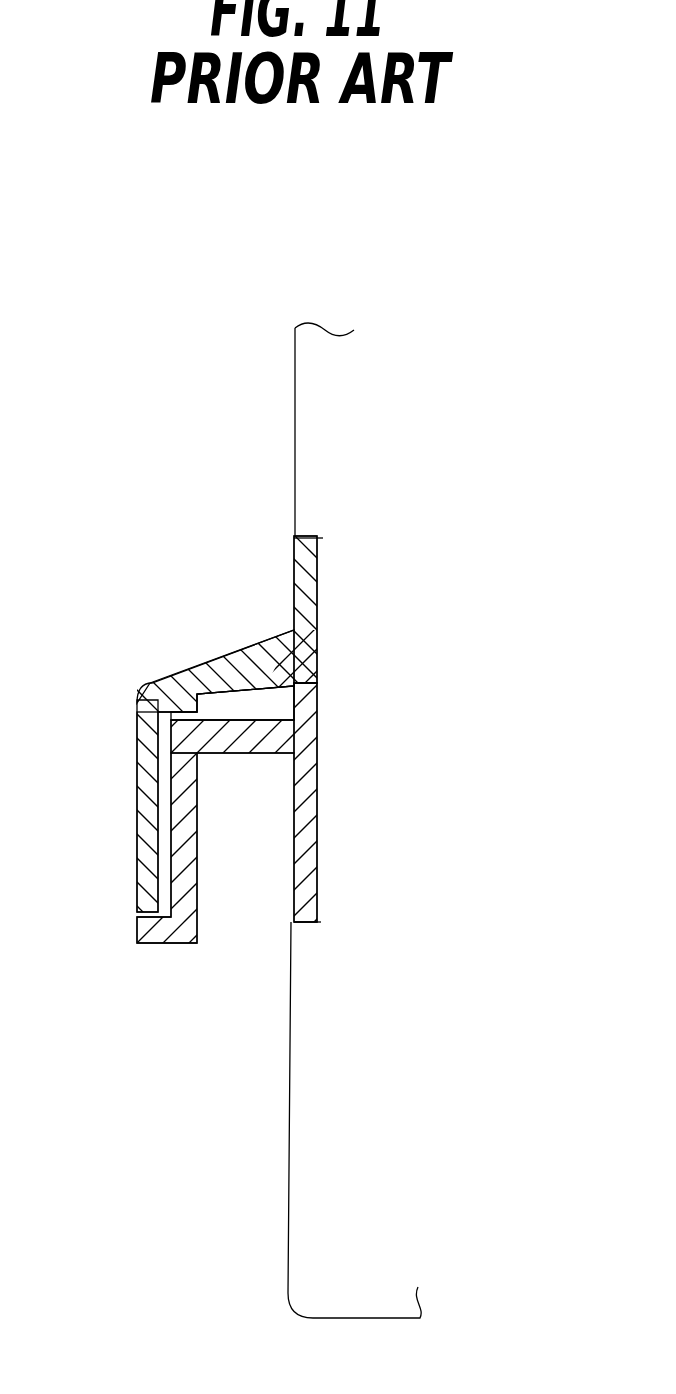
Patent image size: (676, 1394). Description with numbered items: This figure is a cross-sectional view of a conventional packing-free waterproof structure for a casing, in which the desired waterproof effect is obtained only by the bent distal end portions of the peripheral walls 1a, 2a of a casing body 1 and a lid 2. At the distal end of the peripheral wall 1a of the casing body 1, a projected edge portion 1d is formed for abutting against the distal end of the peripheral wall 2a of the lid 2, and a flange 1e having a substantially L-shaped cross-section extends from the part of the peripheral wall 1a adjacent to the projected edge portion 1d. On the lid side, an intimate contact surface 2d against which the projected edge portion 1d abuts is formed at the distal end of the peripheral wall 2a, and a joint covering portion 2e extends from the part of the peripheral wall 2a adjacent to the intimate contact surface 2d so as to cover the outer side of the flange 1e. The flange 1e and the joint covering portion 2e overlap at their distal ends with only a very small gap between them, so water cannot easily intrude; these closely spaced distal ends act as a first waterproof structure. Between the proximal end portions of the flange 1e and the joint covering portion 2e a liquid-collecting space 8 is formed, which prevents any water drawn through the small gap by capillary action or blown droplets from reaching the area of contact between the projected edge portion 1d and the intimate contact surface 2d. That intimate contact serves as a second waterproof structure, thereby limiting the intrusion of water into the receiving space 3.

The casing body 1 is at (287, 1267).
The peripheral wall of the casing body 1a is at (310, 888).
The projected edge portion 1d is at (305, 696).
The flange 1e is at (200, 920).
The lid 2 is at (295, 357).
The peripheral wall of the lid 2a is at (294, 573).
The intimate contact surface 2d is at (308, 665).
The joint covering portion 2e is at (137, 740).
The receiving space 3 is at (515, 804).
The liquid-collecting space 8 is at (257, 700).